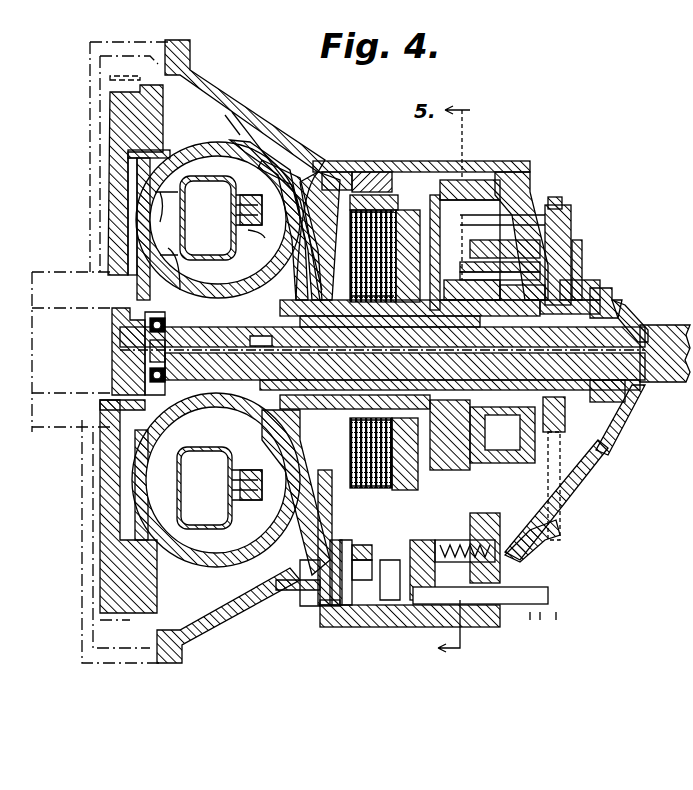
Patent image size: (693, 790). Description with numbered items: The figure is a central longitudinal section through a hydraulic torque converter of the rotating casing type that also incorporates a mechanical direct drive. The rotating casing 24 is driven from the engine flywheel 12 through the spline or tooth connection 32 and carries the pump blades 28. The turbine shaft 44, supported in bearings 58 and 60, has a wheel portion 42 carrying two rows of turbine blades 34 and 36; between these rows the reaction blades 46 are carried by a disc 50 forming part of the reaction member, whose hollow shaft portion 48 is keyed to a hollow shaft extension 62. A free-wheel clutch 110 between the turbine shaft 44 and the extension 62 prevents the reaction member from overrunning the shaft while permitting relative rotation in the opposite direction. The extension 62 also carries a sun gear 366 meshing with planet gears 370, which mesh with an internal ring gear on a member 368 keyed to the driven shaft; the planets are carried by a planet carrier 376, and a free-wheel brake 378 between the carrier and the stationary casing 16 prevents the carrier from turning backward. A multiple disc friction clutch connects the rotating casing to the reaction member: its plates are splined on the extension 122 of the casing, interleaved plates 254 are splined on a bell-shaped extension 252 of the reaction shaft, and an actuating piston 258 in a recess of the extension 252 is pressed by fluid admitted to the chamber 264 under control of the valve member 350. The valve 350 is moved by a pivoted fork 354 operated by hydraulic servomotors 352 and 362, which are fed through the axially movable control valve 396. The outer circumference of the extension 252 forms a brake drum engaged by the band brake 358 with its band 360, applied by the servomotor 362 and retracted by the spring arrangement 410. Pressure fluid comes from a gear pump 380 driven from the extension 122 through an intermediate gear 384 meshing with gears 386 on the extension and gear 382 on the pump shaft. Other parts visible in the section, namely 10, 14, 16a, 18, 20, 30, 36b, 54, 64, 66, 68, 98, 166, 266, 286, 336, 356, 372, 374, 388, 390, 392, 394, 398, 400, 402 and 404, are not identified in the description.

The housing 10 is at (50, 312).
The engine flywheel 12 is at (118, 110).
The cover 18 is at (88, 88).
The spline or tooth connection 32 is at (132, 150).
The rotating casing 24 is at (140, 166).
The wall member 20 is at (158, 208).
The turbine blades 36 is at (236, 168).
The pump blades 28 is at (165, 241).
The turbine hub 68 is at (232, 295).
The torus shell 36b is at (248, 248).
The stationary casing 16 is at (347, 106).
The casing 14 is at (202, 123).
The pump shell 54 is at (228, 112).
The reaction blades 46 is at (250, 140).
The turbine blades 34 is at (268, 190).
The disc 50 is at (300, 180).
The extension of the rotating casing 122 is at (318, 165).
The cover rim 16a is at (340, 172).
The brake band 360 is at (380, 172).
The band brake 358 is at (370, 195).
The spring arrangement 410 is at (410, 200).
The clutch plates 336 is at (352, 236).
The partition 286 is at (440, 190).
The bell-shaped extension 252 is at (470, 178).
The clutch plates 254 is at (466, 195).
The valve member 350 is at (460, 190).
The clutch actuating plate or piston 258 is at (522, 180).
The chamber 264 is at (520, 205).
The bolt 166 is at (565, 200).
The disc 266 is at (565, 215).
The ring 372 is at (540, 240).
The free-wheel brake 378 is at (572, 250).
The washer 374 is at (540, 262).
The ring gear member 368 is at (572, 275).
The planet carrier 376 is at (545, 290).
The planet gears 370 is at (582, 292).
The sun gear 366 is at (600, 300).
The hollow shaft extension 62 is at (620, 306).
The bearing 60 is at (628, 322).
The hollow shaft portion 48 is at (382, 353).
The turbine shaft 44 is at (662, 385).
The bearing housing 30 is at (116, 320).
The bearing 98 is at (132, 352).
The bearing 58 is at (116, 396).
The plate 66 is at (570, 420).
The free-wheel clutch 110 is at (580, 445).
The lever 356 is at (545, 495).
The pivoted fork 354 is at (545, 515).
The turbine 64 is at (165, 440).
The wheel portion 42 is at (262, 442).
The intermediate gear 384 is at (300, 560).
The servomotor 362 is at (378, 628).
The piston 404 is at (505, 568).
The spring 400 is at (490, 582).
The control valve 396 is at (548, 600).
The servomotor 352 is at (495, 630).
The valve 394 is at (462, 628).
The port 392 is at (392, 622).
The seat 402 is at (378, 640).
The plunger 398 is at (368, 612).
The wall 390 is at (338, 630).
The pump shaft gear 382 is at (320, 614).
The flange 388 is at (306, 600).
The gear pump 380 is at (310, 620).
The gears 386 is at (250, 600).